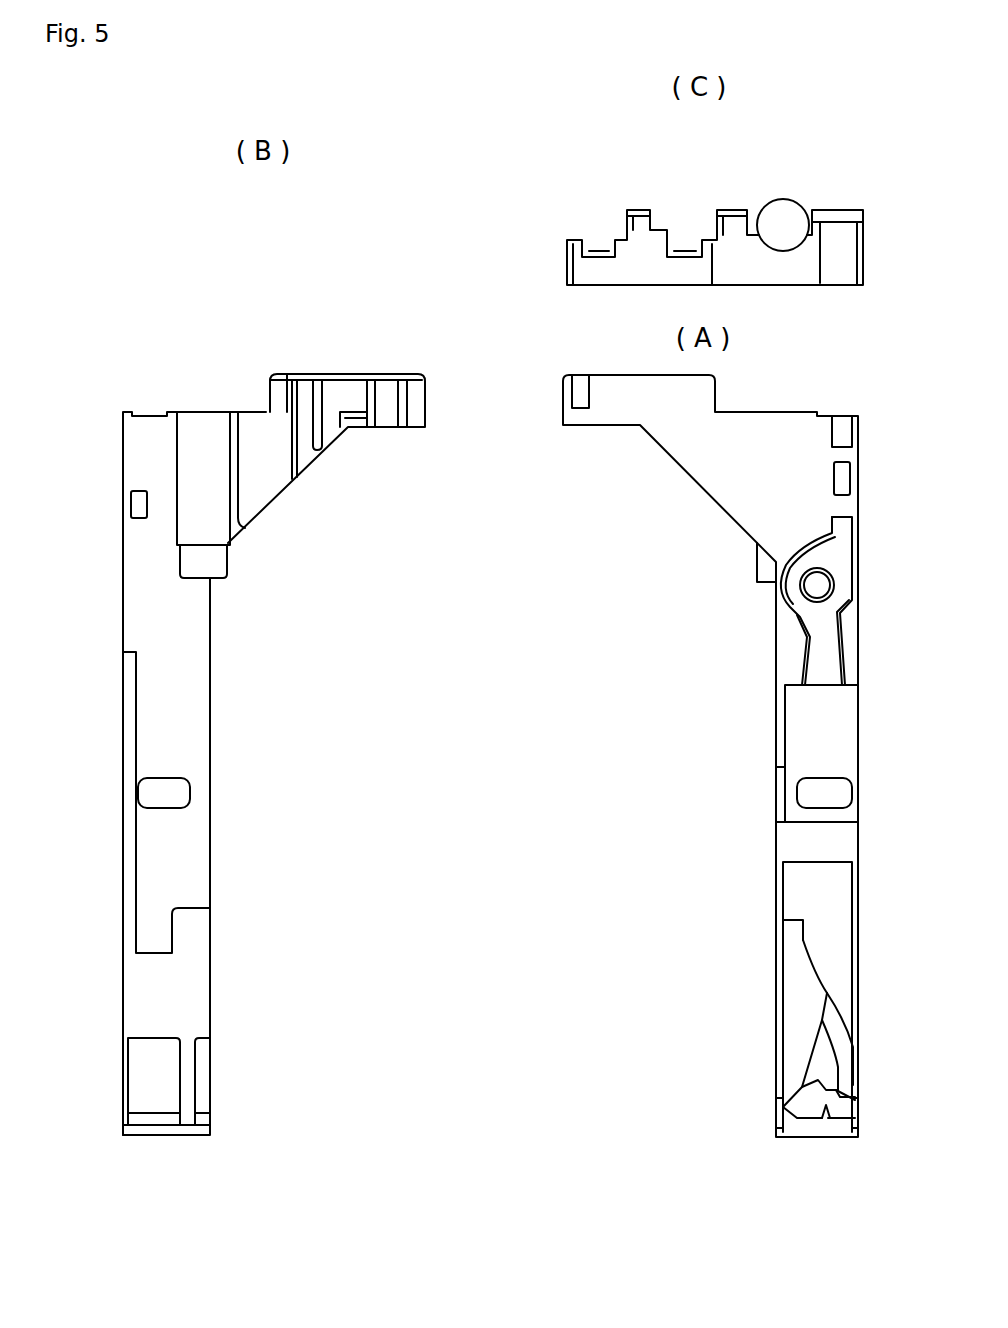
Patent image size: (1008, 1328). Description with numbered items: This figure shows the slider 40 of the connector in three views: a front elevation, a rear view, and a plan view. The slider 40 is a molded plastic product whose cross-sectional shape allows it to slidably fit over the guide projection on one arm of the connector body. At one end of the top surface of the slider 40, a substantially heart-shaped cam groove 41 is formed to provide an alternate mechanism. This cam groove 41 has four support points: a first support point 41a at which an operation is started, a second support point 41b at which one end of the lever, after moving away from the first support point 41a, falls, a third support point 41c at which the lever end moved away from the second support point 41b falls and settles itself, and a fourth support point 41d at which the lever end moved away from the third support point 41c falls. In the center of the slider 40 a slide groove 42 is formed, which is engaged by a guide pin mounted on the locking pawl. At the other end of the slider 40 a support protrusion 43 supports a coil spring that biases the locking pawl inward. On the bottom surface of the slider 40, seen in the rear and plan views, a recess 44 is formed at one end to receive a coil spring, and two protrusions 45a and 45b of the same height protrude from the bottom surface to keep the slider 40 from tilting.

In FIG. 5B, the slider 40 is at (186, 659).
In FIG. 5A, the slider 40 is at (735, 495).
In FIG. 5C, the slider 40 is at (715, 247).
In FIG. 5A, the cam groove 41 is at (793, 1025).
In FIG. 5A, the first support point 41a is at (793, 933).
In FIG. 5A, the second support point 41b is at (805, 1103).
In FIG. 5A, the third support point 41c is at (825, 1107).
In FIG. 5A, the fourth support point 41d is at (850, 1107).
In FIG. 5B, the slide groove 42 is at (162, 780).
In FIG. 5A, the slide groove 42 is at (818, 779).
In FIG. 5A, the support protrusion 43 is at (818, 583).
In FIG. 5B, the recess 44 is at (203, 437).
In FIG. 5C, the recess 44 is at (778, 250).
In FIG. 5B, the protrusion 45a is at (352, 420).
In FIG. 5C, the protrusion 45a is at (640, 213).
In FIG. 5B, the protrusion 45b is at (255, 428).
In FIG. 5C, the protrusion 45b is at (735, 213).